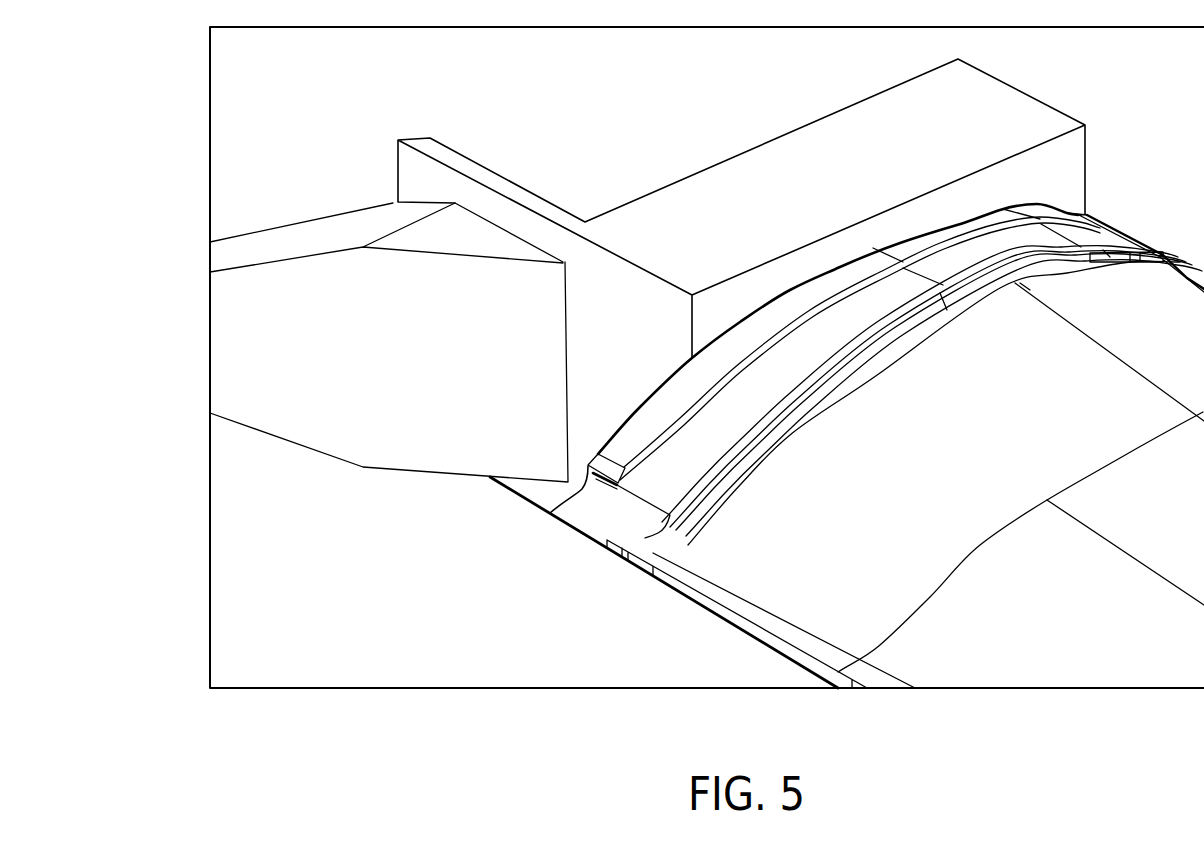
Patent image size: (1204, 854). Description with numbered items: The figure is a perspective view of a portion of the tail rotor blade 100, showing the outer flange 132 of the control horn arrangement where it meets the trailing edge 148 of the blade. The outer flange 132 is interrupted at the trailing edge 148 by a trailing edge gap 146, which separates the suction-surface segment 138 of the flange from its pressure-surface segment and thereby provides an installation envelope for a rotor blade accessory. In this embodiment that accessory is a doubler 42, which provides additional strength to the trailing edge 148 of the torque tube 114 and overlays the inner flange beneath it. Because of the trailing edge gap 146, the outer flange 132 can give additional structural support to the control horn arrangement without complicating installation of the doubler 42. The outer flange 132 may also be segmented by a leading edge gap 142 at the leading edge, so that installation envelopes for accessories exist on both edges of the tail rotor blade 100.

The tail rotor blade 100 is at (481, 733).
The outer flange 132 is at (822, 260).
The suction-surface segment 138 is at (637, 433).
The leading edge gap 142 is at (1100, 245).
The trailing edge gap 146 is at (650, 482).
The trailing edge 148 is at (757, 630).
The doubler 42 is at (597, 514).
The torque tube 114 is at (1147, 537).